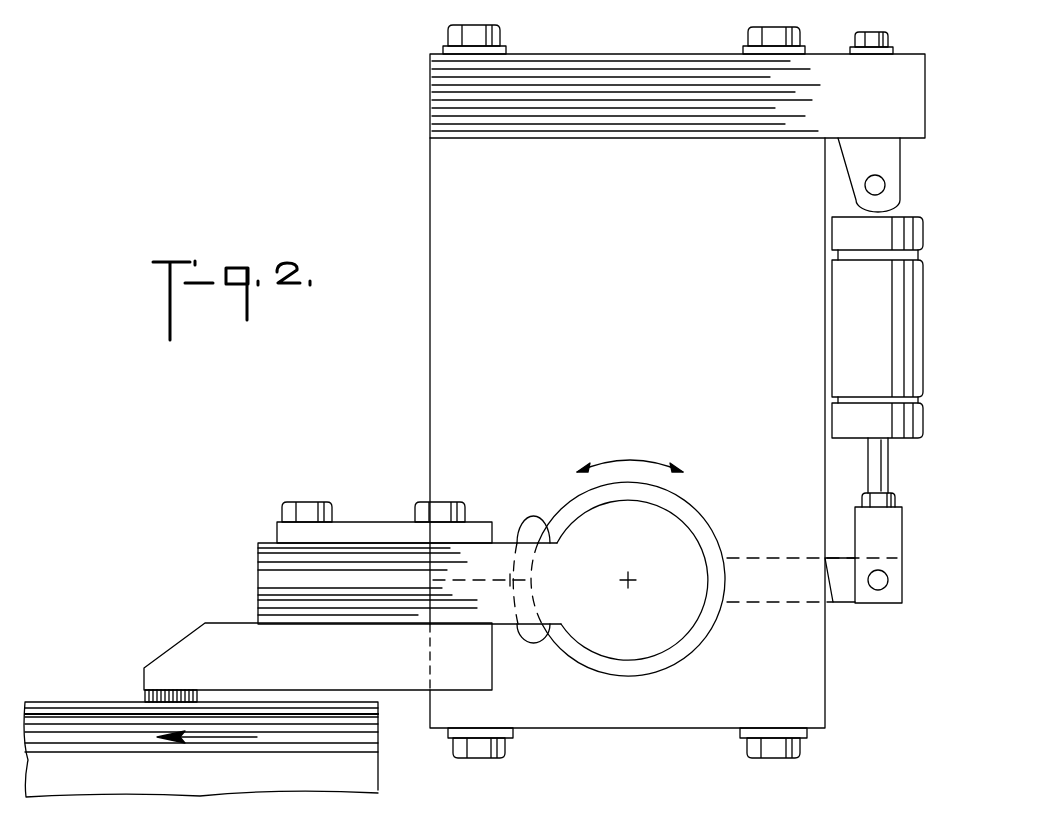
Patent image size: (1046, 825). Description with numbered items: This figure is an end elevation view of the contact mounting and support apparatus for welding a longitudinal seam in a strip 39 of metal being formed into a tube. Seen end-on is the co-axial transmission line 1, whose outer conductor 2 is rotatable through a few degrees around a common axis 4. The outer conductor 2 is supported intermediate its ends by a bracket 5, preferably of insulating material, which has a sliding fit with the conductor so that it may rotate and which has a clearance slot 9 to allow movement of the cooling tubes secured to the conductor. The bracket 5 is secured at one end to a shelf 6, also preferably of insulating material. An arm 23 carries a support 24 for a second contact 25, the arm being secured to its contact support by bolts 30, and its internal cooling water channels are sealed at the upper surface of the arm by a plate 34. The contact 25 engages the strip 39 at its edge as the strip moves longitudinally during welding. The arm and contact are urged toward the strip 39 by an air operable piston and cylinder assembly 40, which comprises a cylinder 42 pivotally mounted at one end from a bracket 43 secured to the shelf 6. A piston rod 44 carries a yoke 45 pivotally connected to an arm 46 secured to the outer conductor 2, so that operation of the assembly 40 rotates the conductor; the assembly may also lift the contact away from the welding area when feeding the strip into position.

The co-axial transmission line 1 is at (702, 505).
The outer conductor 2 is at (708, 530).
The common axis 4 is at (632, 585).
The bracket 5 is at (440, 371).
The shelf 6 is at (430, 92).
The clearance slot 9 is at (541, 516).
The arm 23 is at (262, 572).
The support 24 is at (168, 651).
The second contact 25 is at (143, 692).
The bolts 30 is at (318, 502).
The plate 34 is at (372, 522).
The strip 39 is at (55, 700).
The piston and cylinder assembly 40 is at (849, 327).
The cylinder 42 is at (845, 297).
The bracket 43 is at (855, 160).
The piston rod 44 is at (880, 470).
The yoke 45 is at (885, 535).
The arm 46 is at (845, 597).